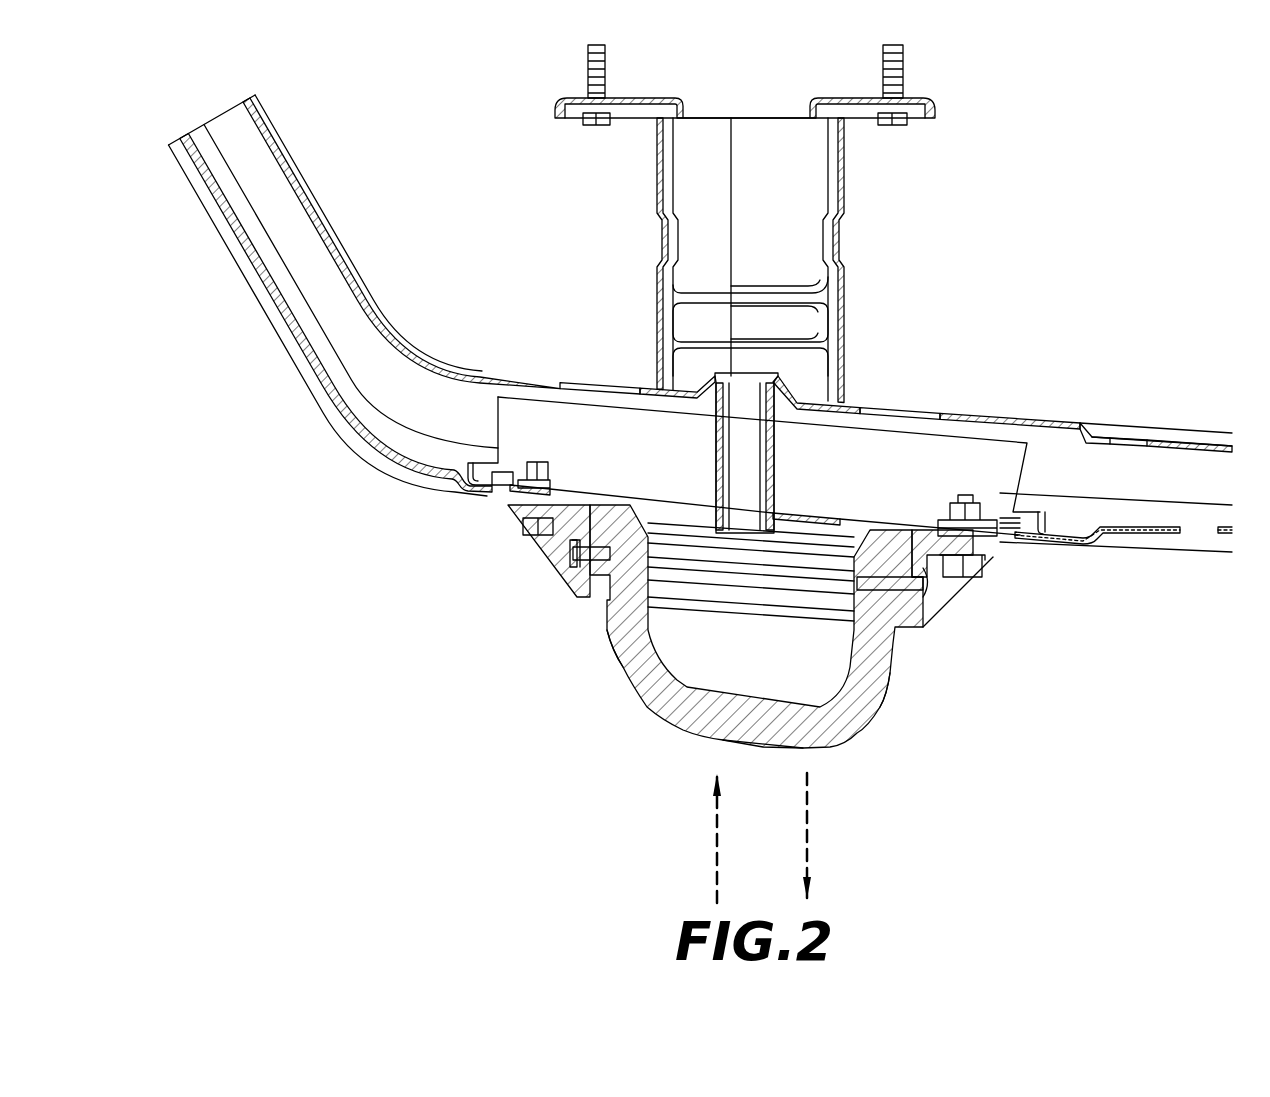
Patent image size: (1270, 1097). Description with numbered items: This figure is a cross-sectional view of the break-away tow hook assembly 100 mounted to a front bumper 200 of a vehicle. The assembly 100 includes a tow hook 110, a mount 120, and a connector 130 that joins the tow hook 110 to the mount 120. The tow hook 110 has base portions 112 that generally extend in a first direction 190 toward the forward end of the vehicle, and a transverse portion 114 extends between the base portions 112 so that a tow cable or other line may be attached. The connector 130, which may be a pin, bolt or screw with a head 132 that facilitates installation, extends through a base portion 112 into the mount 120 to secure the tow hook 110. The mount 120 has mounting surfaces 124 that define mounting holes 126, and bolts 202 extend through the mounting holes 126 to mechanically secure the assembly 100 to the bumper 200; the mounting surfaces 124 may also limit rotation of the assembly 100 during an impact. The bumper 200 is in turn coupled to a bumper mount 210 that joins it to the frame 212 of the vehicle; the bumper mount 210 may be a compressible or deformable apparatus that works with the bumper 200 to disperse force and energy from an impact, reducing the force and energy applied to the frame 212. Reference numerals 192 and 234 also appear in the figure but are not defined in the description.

The break-away tow hook assembly 100 is at (592, 786).
The tow hook 110 is at (906, 720).
The base portions 112 is at (605, 647).
The transverse portion 114 is at (680, 728).
The mount 120 is at (930, 605).
The mounting surfaces 124 is at (478, 448).
The mounting holes 126 is at (478, 400).
The connector 130 is at (580, 574).
The head 132 is at (573, 553).
The first direction 190 is at (812, 845).
The upward force direction 192 is at (713, 837).
The bumper 200 is at (300, 418).
The bolts 202 is at (532, 530).
The bumper mount 210 is at (638, 284).
The frame 212 is at (952, 118).
The bolt head 234 is at (572, 562).